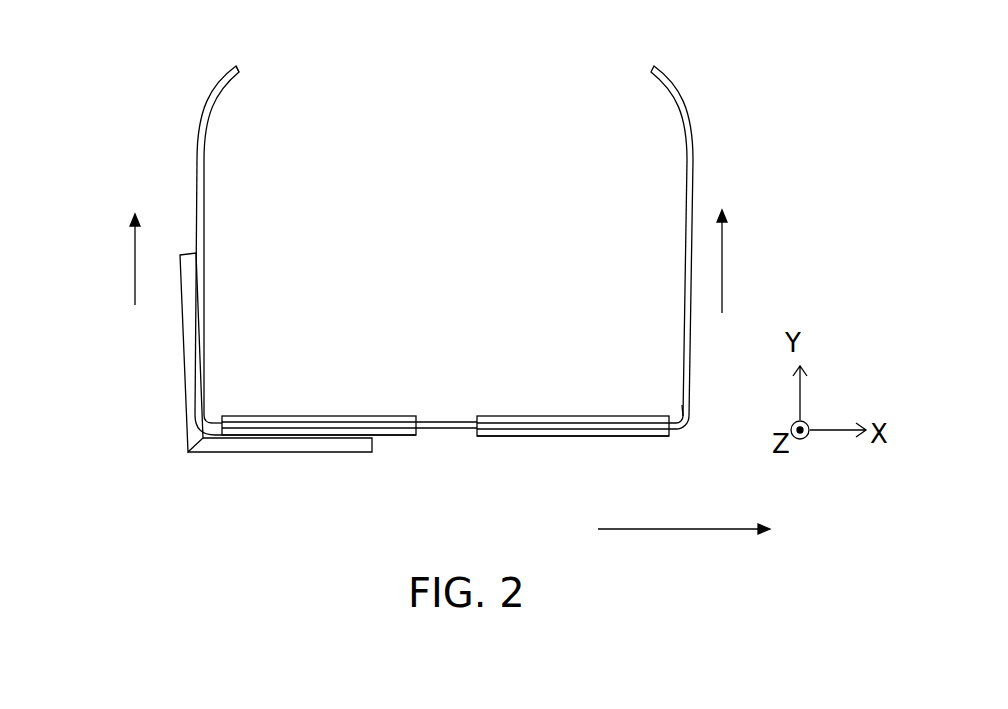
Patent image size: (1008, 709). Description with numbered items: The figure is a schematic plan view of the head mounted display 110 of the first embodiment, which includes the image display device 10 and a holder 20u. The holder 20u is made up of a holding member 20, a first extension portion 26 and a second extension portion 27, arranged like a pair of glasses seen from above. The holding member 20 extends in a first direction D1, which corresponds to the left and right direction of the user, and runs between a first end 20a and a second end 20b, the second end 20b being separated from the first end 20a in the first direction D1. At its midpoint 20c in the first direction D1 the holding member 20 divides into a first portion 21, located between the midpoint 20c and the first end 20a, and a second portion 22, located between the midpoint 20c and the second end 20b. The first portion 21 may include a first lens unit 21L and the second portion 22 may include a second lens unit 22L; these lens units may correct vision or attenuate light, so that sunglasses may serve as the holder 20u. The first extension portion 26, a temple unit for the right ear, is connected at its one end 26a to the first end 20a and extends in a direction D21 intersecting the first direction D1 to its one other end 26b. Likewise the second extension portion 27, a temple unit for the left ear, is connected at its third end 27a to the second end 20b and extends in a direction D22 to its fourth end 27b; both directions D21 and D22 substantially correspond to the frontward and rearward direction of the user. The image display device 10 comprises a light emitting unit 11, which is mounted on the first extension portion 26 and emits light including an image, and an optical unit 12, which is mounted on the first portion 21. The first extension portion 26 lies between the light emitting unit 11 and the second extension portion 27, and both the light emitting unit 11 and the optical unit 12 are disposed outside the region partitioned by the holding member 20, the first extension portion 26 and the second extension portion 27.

The head mounted display 110 is at (430, 273).
The image display device 10 is at (212, 382).
The light emitting unit 11 is at (188, 408).
The optical unit 12 is at (216, 447).
The holding member 20 is at (475, 457).
The first end 20a is at (210, 418).
The second end 20b is at (680, 416).
The midpoint 20c is at (448, 420).
The holder 20u is at (183, 127).
The first portion 21 is at (398, 429).
The first lens unit 21L is at (383, 434).
The second portion 22 is at (563, 426).
The second lens unit 22L is at (623, 437).
The first extension portion 26 is at (205, 201).
The one end 26a is at (211, 414).
The one other end 26b is at (240, 67).
The second extension portion 27 is at (686, 207).
The third end 27a is at (680, 413).
The fourth end 27b is at (650, 69).
The first direction D1 is at (706, 534).
The direction D21 is at (136, 242).
The direction D22 is at (736, 244).